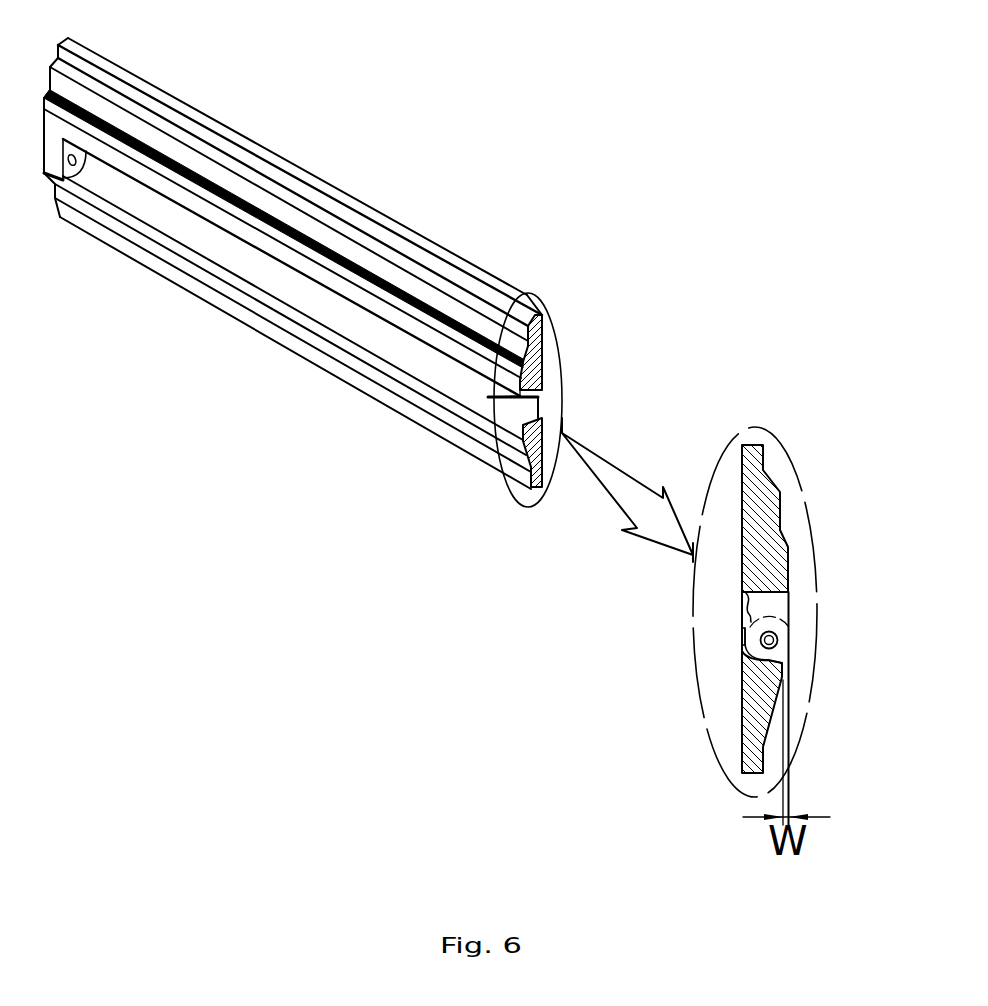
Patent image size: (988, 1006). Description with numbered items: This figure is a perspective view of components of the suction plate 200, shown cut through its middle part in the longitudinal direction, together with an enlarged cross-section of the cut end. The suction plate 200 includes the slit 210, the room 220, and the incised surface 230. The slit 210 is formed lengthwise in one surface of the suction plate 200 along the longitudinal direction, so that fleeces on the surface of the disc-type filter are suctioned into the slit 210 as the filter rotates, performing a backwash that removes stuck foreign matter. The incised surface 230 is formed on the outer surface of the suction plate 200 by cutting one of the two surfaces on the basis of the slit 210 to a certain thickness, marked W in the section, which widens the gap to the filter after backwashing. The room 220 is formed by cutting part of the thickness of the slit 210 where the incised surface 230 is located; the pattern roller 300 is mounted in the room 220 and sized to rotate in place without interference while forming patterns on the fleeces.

The suction plate 200 is at (455, 292).
The slit 210 is at (540, 395).
The room 220 is at (342, 318).
The incised surface 230 is at (440, 397).
The pattern roller 300 is at (780, 621).